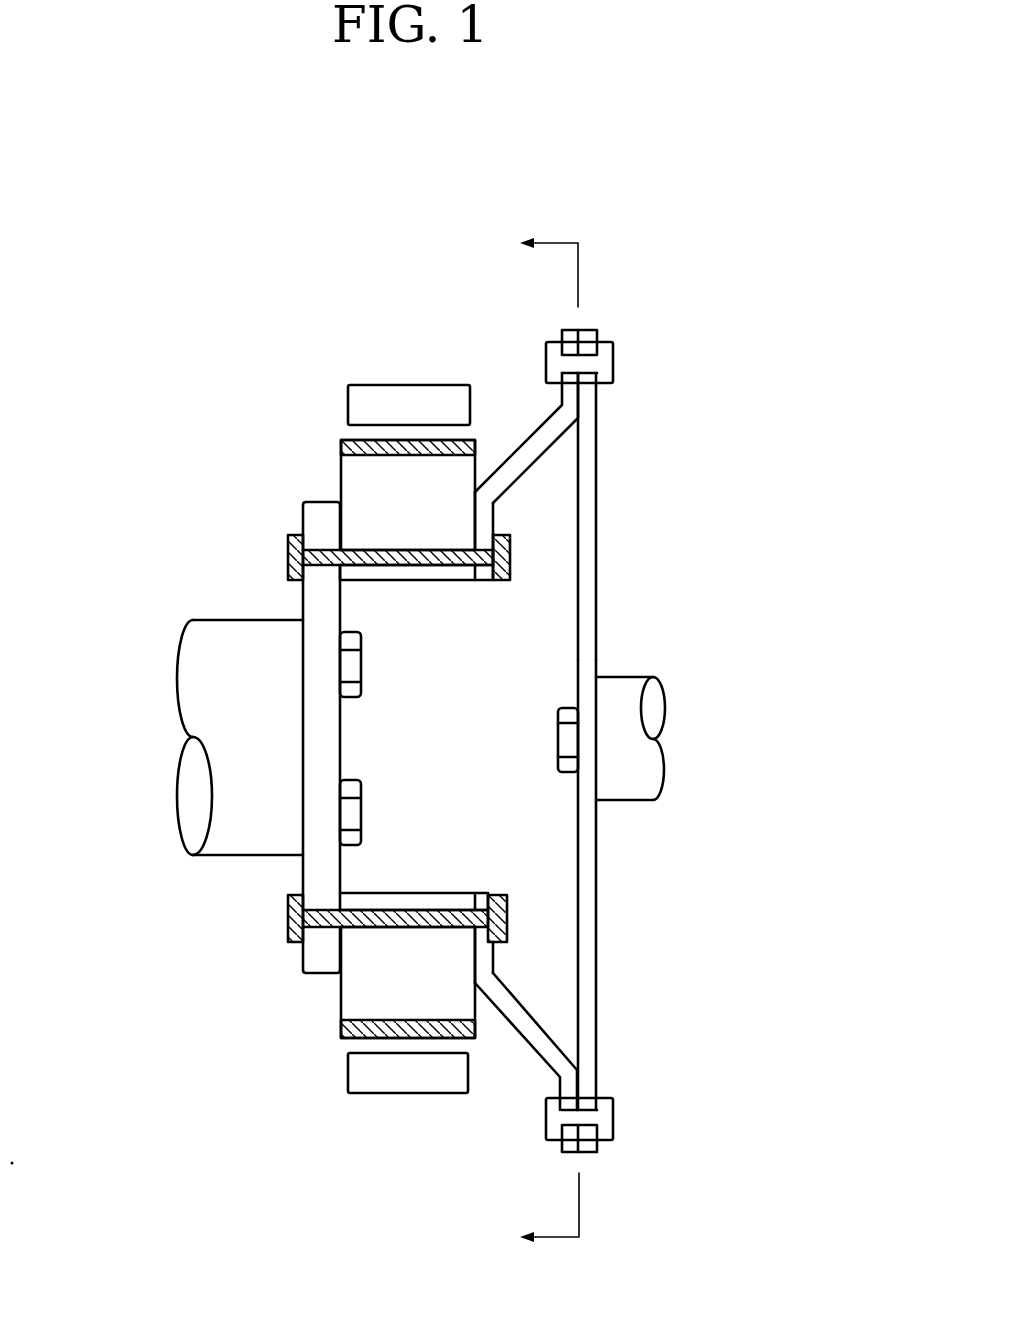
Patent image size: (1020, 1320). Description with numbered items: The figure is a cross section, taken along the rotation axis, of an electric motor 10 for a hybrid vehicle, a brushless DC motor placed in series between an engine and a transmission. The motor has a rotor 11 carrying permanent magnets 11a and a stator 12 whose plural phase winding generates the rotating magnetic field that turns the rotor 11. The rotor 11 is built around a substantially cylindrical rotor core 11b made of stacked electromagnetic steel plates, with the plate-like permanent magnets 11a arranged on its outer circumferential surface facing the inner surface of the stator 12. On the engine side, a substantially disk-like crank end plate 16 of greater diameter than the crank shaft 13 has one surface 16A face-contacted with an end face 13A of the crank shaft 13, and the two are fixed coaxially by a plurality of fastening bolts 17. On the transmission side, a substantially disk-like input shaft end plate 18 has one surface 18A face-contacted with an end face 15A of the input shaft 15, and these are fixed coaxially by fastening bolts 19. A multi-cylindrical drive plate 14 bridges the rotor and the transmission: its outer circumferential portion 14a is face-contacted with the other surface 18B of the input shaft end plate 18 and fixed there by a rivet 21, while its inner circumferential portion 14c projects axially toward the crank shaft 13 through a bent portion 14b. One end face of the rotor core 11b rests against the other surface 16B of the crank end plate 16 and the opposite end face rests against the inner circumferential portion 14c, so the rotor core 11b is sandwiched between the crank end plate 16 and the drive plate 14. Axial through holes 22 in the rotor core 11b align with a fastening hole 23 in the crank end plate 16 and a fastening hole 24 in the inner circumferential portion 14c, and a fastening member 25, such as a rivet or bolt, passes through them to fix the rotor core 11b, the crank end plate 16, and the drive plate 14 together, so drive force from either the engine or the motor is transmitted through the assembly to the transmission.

The electric motor for a hybrid vehicle 10 is at (232, 300).
The rotor 11 is at (290, 694).
The permanent magnets 11a is at (337, 452).
The rotor core 11b is at (352, 476).
The stator 12 is at (360, 384).
The crank shaft 13 is at (213, 735).
The end face of the crank shaft 13A is at (303, 757).
The drive plate 14 is at (547, 692).
The outer circumferential portion 14a is at (568, 338).
The bent portion 14b is at (515, 450).
The inner circumferential portion 14c is at (483, 514).
The input shaft 15 is at (623, 750).
The end face of the input shaft 15A is at (596, 790).
The crank end plate 16 is at (251, 737).
The one surface of the crank end plate 16A is at (310, 628).
The other surface of the crank end plate 16B is at (338, 741).
The fastening bolts 17 is at (256, 738).
The input shaft end plate 18 is at (592, 741).
The one surface of the input shaft end plate 18A is at (593, 876).
The other surface of the input shaft end plate 18B is at (570, 444).
The fastening bolts 19 is at (557, 740).
The rivet 21 is at (600, 357).
The through holes 22 is at (408, 726).
The fastening hole 23 is at (300, 558).
The fastening hole 24 is at (503, 546).
The fastening member 25 is at (503, 560).